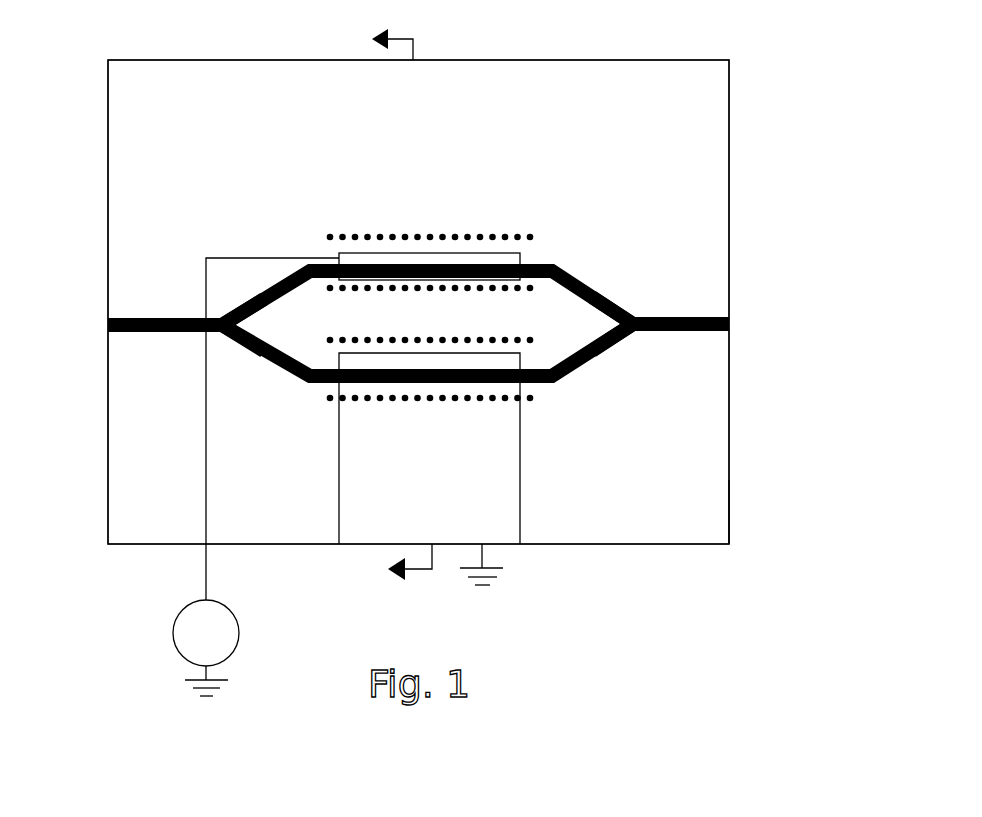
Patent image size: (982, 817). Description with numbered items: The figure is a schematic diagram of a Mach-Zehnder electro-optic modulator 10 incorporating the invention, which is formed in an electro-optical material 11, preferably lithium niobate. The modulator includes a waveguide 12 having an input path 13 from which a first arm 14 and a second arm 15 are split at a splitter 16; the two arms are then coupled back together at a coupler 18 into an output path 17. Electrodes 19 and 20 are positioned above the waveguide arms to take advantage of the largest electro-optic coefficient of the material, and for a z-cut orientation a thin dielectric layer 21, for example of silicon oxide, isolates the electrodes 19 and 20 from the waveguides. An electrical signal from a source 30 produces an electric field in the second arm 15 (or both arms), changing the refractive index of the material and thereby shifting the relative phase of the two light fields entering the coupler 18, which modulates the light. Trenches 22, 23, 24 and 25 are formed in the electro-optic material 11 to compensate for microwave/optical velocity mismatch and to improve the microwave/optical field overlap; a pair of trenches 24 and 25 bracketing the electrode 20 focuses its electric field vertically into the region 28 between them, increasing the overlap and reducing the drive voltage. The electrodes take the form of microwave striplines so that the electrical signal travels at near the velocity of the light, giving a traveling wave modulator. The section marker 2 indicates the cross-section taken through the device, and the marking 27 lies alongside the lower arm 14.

The section line 2- 2 is at (381, 299).
The Mach-Zehnder modulator 10 is at (730, 178).
The electro-optical material 11 is at (118, 108).
The waveguide 12 is at (418, 291).
The input path 13 is at (150, 317).
The first arm 14 is at (290, 378).
The second arm 15 is at (535, 260).
The splitter 16 is at (220, 318).
The output path 17 is at (695, 333).
The coupler 18 is at (643, 315).
The electrode 19 is at (520, 503).
The electrode 20 is at (373, 258).
The dielectric layer 21 is at (707, 524).
The trench 22 is at (532, 403).
The trench 23 is at (323, 338).
The trench 24 is at (507, 296).
The trench 25 is at (399, 217).
The poled region 27 is at (470, 400).
The region 28 is at (335, 241).
The source 30 is at (240, 625).